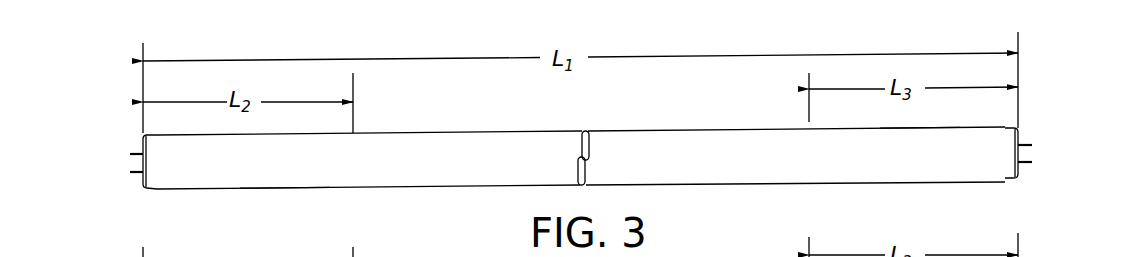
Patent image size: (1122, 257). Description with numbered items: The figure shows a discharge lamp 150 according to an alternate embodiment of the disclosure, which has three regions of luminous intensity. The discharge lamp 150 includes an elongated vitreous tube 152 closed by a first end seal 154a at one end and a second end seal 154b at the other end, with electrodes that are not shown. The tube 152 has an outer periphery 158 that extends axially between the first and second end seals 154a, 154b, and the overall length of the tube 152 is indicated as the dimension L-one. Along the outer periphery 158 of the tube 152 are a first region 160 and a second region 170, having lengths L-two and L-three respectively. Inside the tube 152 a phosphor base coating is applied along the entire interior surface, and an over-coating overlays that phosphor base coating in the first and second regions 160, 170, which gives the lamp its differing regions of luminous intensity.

The discharge lamp 150 is at (613, 151).
The elongated vitreous tube 152 is at (715, 132).
The first end seal 154a is at (150, 190).
The second end seal 154b is at (1020, 129).
The outer periphery 158 is at (443, 131).
The first region 160 is at (298, 191).
The second region 170 is at (915, 126).